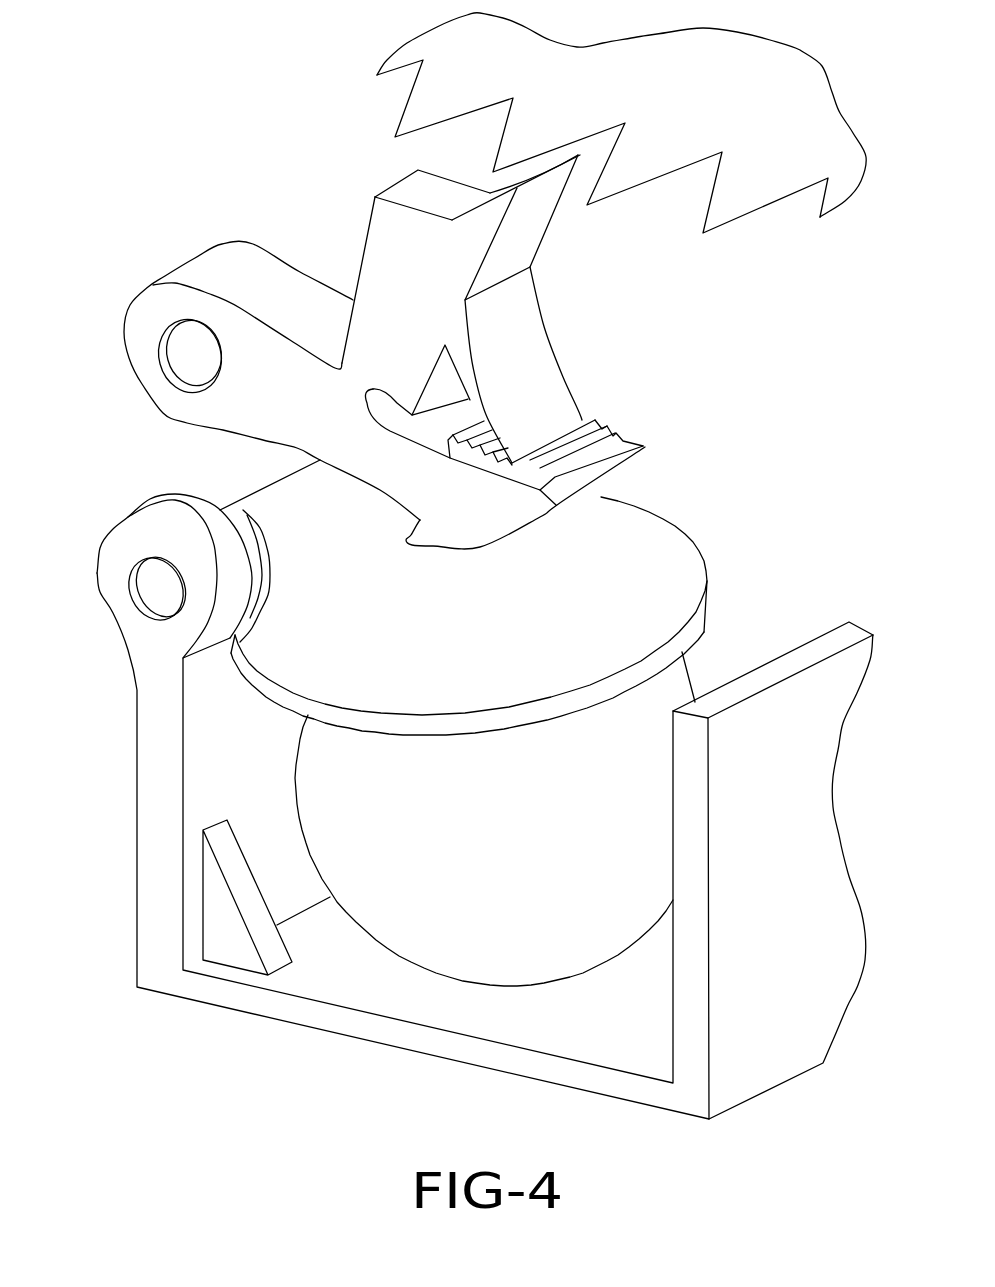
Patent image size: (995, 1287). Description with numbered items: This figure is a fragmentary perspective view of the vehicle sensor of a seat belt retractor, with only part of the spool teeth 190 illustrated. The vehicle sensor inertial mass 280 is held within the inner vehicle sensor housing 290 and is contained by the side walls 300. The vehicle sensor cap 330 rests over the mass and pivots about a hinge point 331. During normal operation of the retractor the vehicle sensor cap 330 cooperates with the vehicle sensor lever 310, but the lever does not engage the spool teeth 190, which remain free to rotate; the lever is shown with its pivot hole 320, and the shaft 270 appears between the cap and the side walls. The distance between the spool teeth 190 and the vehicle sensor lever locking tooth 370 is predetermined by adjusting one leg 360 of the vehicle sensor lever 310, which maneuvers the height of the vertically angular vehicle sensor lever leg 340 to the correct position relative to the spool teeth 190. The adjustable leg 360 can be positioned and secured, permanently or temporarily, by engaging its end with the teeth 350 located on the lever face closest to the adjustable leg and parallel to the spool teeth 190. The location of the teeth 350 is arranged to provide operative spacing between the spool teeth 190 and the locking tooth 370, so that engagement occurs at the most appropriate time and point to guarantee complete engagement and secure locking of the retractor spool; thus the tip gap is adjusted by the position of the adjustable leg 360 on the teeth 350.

The spool teeth 190 is at (722, 215).
The shaft 270 is at (691, 673).
The vehicle sensor inertial mass 280 is at (447, 957).
The inner vehicle sensor housing 290 is at (220, 972).
The side walls 300 is at (157, 790).
The vehicle sensor lever 310 is at (182, 305).
The pivot hole 320 is at (183, 362).
The vehicle sensor cap 330 is at (637, 537).
The hinge point 331 is at (150, 590).
The vertically angular vehicle sensor lever leg 340 is at (417, 260).
The teeth 350 is at (610, 437).
The adjustable leg 360 is at (535, 362).
The vehicle sensor lever locking tooth 370 is at (555, 172).